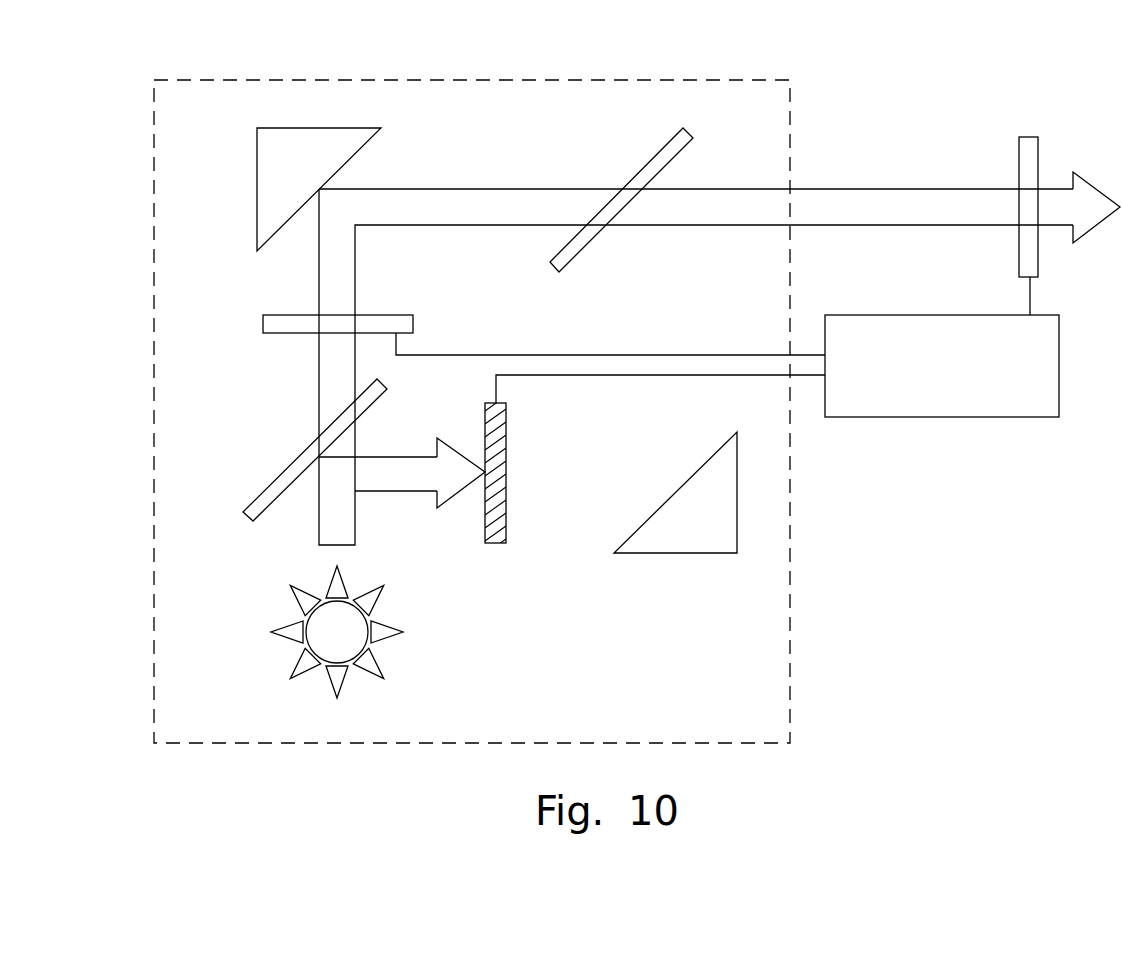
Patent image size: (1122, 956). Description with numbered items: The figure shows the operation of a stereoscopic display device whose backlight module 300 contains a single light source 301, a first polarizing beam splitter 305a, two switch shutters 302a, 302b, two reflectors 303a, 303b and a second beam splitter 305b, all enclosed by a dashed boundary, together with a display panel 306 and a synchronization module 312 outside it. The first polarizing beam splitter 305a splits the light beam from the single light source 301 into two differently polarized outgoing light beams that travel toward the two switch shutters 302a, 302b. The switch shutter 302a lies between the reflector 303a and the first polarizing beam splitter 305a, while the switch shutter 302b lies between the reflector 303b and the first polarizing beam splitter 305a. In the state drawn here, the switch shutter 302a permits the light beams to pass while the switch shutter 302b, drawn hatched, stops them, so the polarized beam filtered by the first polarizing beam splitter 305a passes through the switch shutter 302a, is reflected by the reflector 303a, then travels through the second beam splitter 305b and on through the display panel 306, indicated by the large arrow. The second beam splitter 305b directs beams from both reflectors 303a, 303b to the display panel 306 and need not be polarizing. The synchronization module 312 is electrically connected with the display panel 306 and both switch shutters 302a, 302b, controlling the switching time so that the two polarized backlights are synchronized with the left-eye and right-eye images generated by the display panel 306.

The backlight module 300 is at (90, 90).
The light source 301 is at (357, 645).
The switch shutter 302a is at (392, 318).
The switch shutter 302b is at (502, 460).
The reflector 303a is at (343, 148).
The reflector 303b is at (683, 538).
The first polarizing beam splitter 305a is at (287, 468).
The second beam splitter 305b is at (575, 248).
The display panel 306 is at (1030, 140).
The synchronization module 312 is at (950, 417).